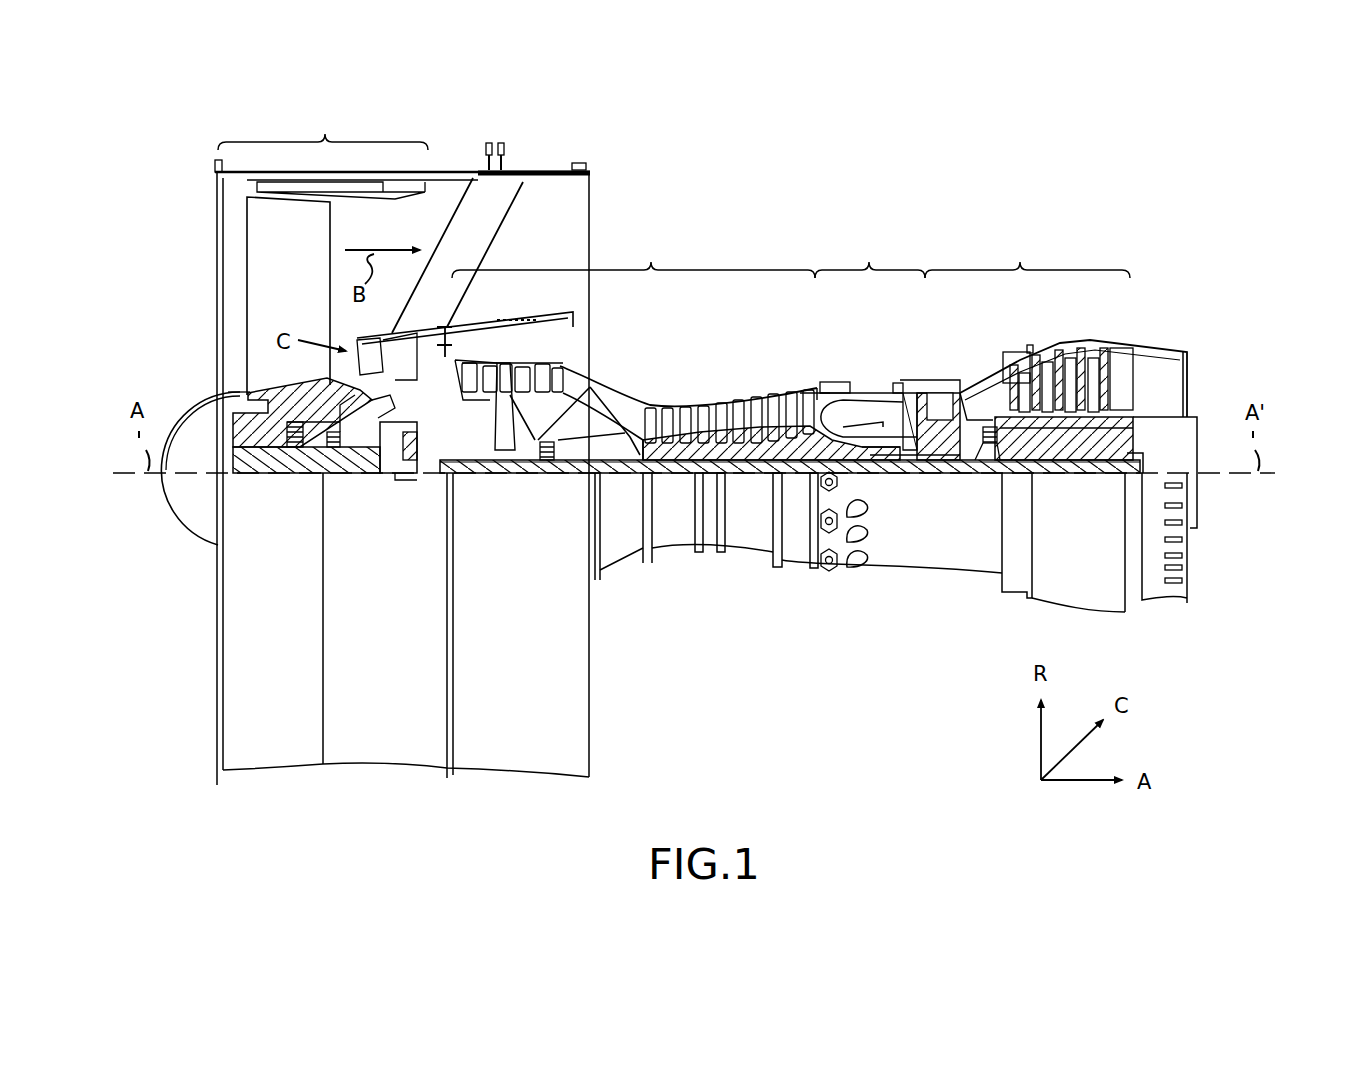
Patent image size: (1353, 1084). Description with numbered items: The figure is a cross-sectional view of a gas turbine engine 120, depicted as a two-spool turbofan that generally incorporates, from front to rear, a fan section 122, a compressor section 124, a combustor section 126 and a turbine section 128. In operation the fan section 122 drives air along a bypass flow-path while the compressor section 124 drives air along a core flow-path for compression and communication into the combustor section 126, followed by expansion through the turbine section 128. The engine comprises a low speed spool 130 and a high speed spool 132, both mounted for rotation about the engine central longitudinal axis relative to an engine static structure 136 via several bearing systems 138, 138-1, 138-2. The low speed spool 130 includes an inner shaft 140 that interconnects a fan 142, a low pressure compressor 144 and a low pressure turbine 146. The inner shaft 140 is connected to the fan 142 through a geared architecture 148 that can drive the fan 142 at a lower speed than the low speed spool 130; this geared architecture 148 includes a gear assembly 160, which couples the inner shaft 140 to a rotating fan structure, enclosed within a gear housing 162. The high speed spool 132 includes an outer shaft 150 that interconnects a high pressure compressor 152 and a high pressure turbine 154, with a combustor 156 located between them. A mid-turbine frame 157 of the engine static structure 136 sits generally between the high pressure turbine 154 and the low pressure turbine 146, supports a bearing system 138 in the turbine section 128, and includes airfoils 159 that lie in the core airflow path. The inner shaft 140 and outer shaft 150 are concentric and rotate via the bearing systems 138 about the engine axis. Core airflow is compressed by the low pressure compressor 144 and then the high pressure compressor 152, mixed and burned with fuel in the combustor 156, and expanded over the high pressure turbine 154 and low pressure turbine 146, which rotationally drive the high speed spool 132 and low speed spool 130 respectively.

The gas turbine engine 120 is at (942, 190).
The fan section 122 is at (323, 124).
The compressor section 124 is at (633, 257).
The combustor section 126 is at (870, 257).
The turbine section 128 is at (1027, 257).
The low speed spool 130 is at (745, 484).
The high speed spool 132 is at (803, 430).
The engine static structure 136 is at (357, 788).
The bearing system 138 is at (985, 445).
The bearing system 138-1 is at (294, 449).
The bearing system 138-2 is at (550, 461).
The inner shaft 140 is at (613, 475).
The fan 142 is at (288, 296).
The low pressure compressor 144 is at (523, 373).
The low pressure turbine 146 is at (1068, 360).
The geared architecture 148 is at (408, 480).
The outer shaft 150 is at (890, 453).
The high pressure compressor 152 is at (757, 430).
The high pressure turbine 154 is at (938, 400).
The combustor 156 is at (860, 417).
The mid-turbine frame 157 is at (970, 387).
The airfoils 159 is at (990, 395).
The gear assembly 160 is at (410, 458).
The gear housing 162 is at (413, 422).